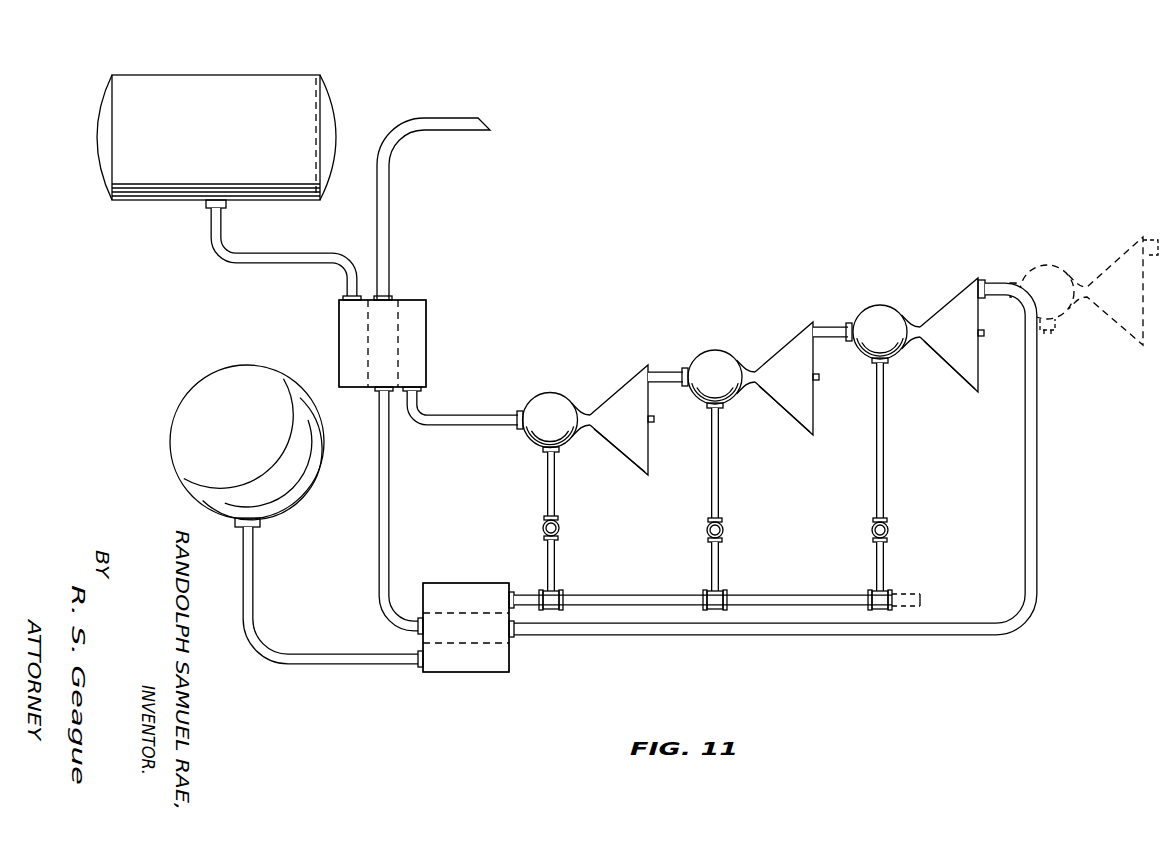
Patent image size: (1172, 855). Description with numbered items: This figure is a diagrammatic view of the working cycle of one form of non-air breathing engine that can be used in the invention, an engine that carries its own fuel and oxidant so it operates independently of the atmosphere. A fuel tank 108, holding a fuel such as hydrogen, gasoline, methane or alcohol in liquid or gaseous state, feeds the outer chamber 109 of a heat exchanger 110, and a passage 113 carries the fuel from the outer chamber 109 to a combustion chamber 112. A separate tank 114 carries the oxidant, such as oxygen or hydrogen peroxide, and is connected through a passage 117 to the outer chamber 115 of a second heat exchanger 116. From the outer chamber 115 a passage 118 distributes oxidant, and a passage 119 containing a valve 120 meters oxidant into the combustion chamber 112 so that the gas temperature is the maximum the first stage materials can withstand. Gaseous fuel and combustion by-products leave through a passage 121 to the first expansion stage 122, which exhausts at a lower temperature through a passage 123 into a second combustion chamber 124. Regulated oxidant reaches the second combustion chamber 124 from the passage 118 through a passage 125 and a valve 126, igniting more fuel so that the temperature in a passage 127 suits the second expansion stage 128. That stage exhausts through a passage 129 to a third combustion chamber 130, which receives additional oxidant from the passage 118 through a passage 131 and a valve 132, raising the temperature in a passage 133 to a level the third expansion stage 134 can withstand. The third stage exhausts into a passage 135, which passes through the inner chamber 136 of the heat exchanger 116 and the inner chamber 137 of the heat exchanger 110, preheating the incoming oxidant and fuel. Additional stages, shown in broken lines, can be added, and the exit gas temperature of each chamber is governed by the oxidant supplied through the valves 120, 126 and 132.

The fuel tank 108 is at (326, 102).
The outer chamber 109 is at (341, 333).
The heat exchanger 110 is at (462, 326).
The combustion chamber 112 is at (539, 400).
The passage 113 is at (472, 408).
The tank 114 is at (178, 468).
The outer chamber 115 is at (472, 665).
The heat exchanger 116 is at (509, 671).
The passage 117 is at (250, 590).
The passage 118 is at (631, 599).
The passage 119 is at (555, 569).
The valve 120 is at (560, 527).
The passage 121 is at (592, 414).
The first expansion stage 122 is at (645, 372).
The passage 123 is at (657, 372).
The second combustion chamber 124 is at (714, 352).
The passage 125 is at (720, 571).
The valve 126 is at (725, 533).
The passage 127 is at (755, 371).
The second expansion stage 128 is at (810, 326).
The passage 129 is at (831, 328).
The third combustion chamber 130 is at (880, 305).
The passage 131 is at (883, 571).
The valve 132 is at (889, 533).
The passage 133 is at (920, 326).
The third expansion stage 134 is at (973, 284).
The passage 135 is at (388, 218).
The inner chamber 136 is at (1115, 266).
The inner chamber 137 is at (1045, 266).